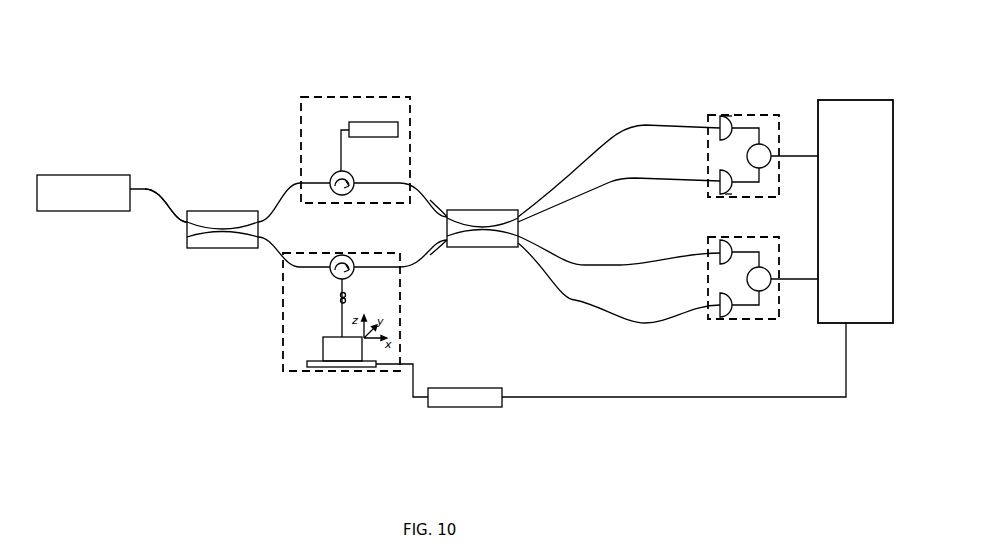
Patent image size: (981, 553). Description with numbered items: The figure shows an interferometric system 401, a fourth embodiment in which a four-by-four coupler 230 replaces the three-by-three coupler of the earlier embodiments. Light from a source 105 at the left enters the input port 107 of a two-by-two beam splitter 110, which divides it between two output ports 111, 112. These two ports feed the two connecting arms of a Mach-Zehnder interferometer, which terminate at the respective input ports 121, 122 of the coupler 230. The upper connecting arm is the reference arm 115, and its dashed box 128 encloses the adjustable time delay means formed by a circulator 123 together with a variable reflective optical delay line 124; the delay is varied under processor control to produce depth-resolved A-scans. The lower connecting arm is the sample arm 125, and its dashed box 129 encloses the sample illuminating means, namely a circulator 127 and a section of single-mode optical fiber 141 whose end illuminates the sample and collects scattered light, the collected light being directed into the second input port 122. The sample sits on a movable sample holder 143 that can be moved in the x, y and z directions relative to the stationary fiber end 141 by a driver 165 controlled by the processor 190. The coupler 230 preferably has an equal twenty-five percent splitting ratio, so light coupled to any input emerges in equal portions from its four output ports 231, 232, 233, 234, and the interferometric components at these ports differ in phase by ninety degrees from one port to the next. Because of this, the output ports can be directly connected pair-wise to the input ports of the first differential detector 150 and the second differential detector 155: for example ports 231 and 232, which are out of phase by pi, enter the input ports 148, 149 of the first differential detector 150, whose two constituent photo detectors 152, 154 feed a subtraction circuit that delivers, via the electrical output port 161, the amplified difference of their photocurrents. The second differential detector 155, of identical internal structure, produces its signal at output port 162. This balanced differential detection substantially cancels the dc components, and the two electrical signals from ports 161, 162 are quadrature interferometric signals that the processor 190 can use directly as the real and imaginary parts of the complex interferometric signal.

The interferometric system 401 is at (538, 28).
The light source 105 is at (93, 174).
The input port 107 is at (181, 207).
The first coupler 110 is at (222, 210).
The output port 111 is at (278, 196).
The output port 112 is at (264, 252).
The reference arm unit 128 is at (312, 97).
The variable reflective optical delay line 124 is at (364, 122).
The circulator 123 is at (352, 192).
The reference arm 115 is at (422, 156).
The sample arm unit 129 is at (305, 371).
The circulator 127 is at (338, 255).
The single-mode optical fiber 141 is at (342, 319).
The movable sample holder 143 is at (360, 367).
The sample arm 125 is at (412, 300).
The input port 121 is at (447, 210).
The input port 122 is at (447, 248).
The 4×4 coupler 230 is at (478, 210).
The output port 231 is at (542, 192).
The output port 232 is at (557, 200).
The output port 233 is at (620, 267).
The output port 234 is at (532, 253).
The input port 148 is at (705, 125).
The input port 149 is at (704, 190).
The photo detector 152 is at (725, 116).
The photo detector 154 is at (725, 194).
The first differential detector 150 is at (757, 115).
The second differential detector 155 is at (760, 219).
The electrical output port 161 is at (785, 150).
The output port 162 is at (783, 272).
The processor 190 is at (862, 100).
The driver 165 is at (440, 407).